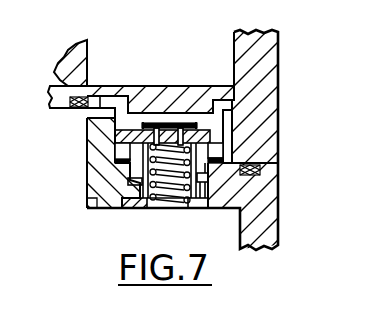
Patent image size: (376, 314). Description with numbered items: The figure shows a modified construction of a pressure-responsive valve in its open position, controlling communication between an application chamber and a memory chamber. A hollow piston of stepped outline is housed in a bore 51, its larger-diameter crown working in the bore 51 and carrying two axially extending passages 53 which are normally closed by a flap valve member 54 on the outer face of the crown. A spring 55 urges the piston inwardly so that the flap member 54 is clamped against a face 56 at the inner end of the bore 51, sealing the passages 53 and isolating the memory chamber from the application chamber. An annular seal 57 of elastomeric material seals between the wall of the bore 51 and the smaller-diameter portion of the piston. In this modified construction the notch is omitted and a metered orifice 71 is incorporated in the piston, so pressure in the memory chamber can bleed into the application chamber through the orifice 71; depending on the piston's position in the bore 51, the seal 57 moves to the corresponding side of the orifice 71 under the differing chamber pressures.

The bore 51 is at (115, 130).
The axially extending passages 53 is at (181, 126).
The flap valve member 54 is at (153, 126).
The spring 55 is at (190, 193).
The face 56 is at (138, 112).
The annular seal 57 is at (235, 147).
The metered orifice 71 is at (137, 196).